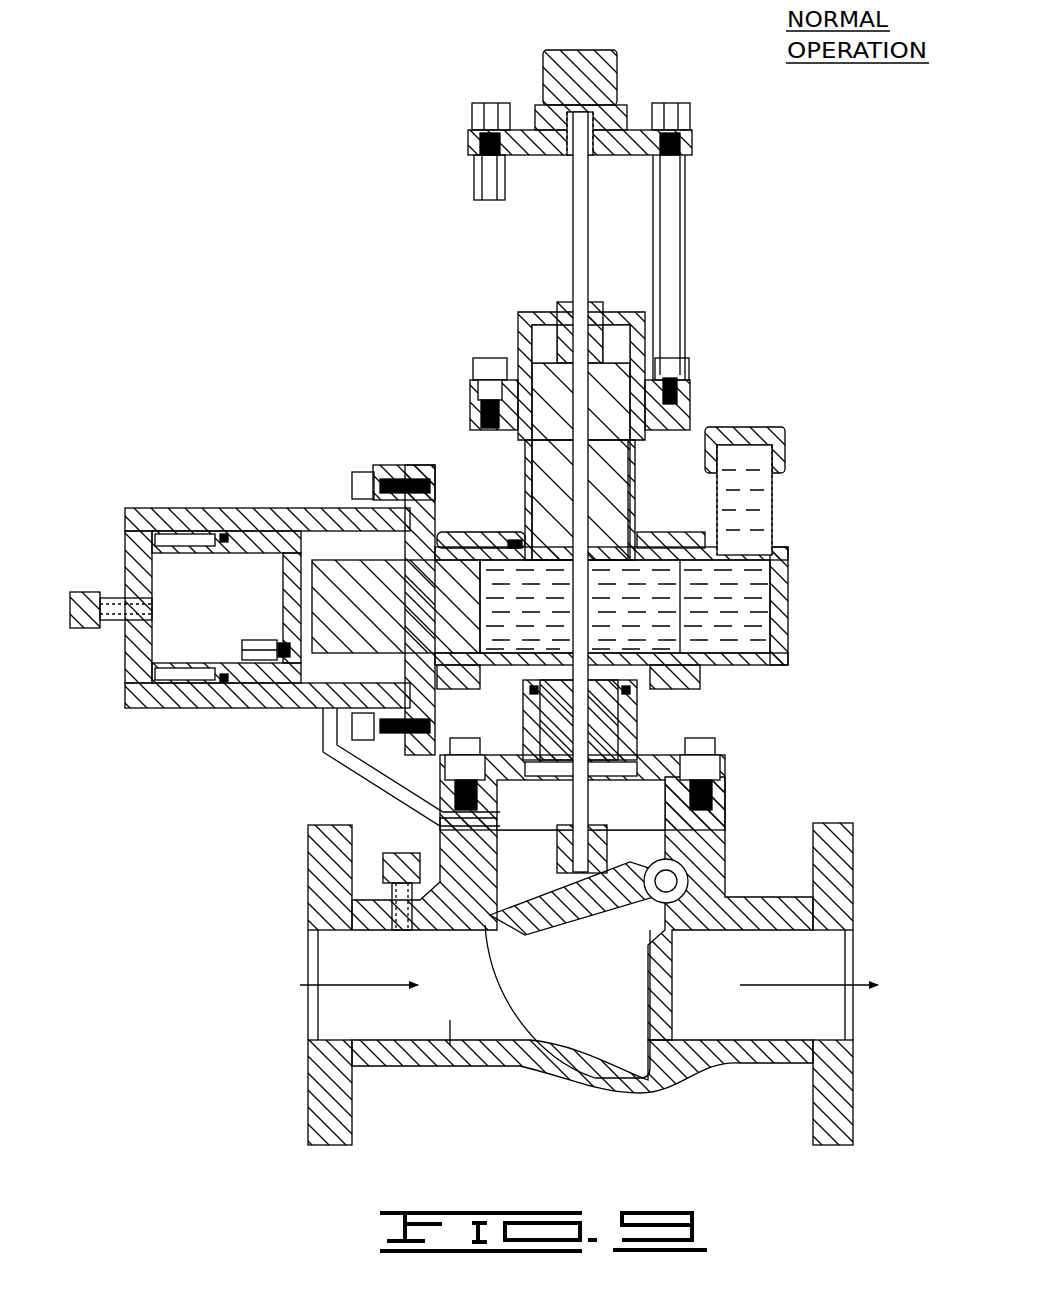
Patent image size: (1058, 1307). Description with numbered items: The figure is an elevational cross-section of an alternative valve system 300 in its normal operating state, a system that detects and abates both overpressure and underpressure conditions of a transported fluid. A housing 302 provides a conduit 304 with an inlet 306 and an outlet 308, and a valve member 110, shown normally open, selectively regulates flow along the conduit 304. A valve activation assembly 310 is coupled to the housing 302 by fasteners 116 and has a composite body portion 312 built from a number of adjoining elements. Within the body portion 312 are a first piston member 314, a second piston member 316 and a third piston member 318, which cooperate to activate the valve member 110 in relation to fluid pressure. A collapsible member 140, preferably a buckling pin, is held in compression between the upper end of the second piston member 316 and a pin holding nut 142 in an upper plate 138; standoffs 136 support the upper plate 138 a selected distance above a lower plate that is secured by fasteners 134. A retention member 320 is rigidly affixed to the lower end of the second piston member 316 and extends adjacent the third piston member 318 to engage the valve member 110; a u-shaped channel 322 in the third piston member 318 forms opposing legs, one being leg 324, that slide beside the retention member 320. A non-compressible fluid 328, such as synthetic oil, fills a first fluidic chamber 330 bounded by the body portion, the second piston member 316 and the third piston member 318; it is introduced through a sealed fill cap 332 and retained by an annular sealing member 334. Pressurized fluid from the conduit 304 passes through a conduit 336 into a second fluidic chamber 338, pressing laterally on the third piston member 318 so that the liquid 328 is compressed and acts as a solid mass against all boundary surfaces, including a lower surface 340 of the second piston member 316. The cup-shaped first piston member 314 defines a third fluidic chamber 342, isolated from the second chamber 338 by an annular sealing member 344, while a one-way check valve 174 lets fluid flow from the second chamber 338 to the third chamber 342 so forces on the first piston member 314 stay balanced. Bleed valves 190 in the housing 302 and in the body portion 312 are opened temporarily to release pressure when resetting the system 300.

The valve member 110 is at (556, 906).
The fasteners 116 is at (462, 740).
The fasteners 134 is at (487, 358).
The standoffs 136 is at (476, 183).
The upper plate 138 is at (545, 105).
The collapsible member 140 is at (573, 238).
The pin holding nut 142 is at (578, 52).
The one-way check valve 174 is at (260, 640).
The bleed valve 190 is at (116, 592).
The valve system 300 is at (318, 198).
The housing 302 is at (668, 1082).
The conduit 304 is at (462, 1025).
The inlet 306 is at (318, 1028).
The outlet 308 is at (848, 1022).
The valve activation assembly 310 is at (820, 375).
The composite body portion 312 is at (792, 582).
The first piston member 314 is at (264, 538).
The second piston member 316 is at (548, 425).
The third piston member 318 is at (420, 562).
The retention member 320 is at (662, 672).
The u-shaped channel 322 is at (690, 626).
The leg 324 is at (650, 560).
The non-compressible fluid 328 is at (755, 500).
The first fluidic chamber 330 is at (735, 586).
The sealed fill cap 332 is at (730, 427).
The annular sealing member 334 is at (430, 670).
The conduit 336 is at (334, 762).
The second fluidic chamber 338 is at (320, 543).
The lower surface 340 is at (514, 540).
The third fluidic chamber 342 is at (195, 622).
The annular sealing member 344 is at (226, 531).